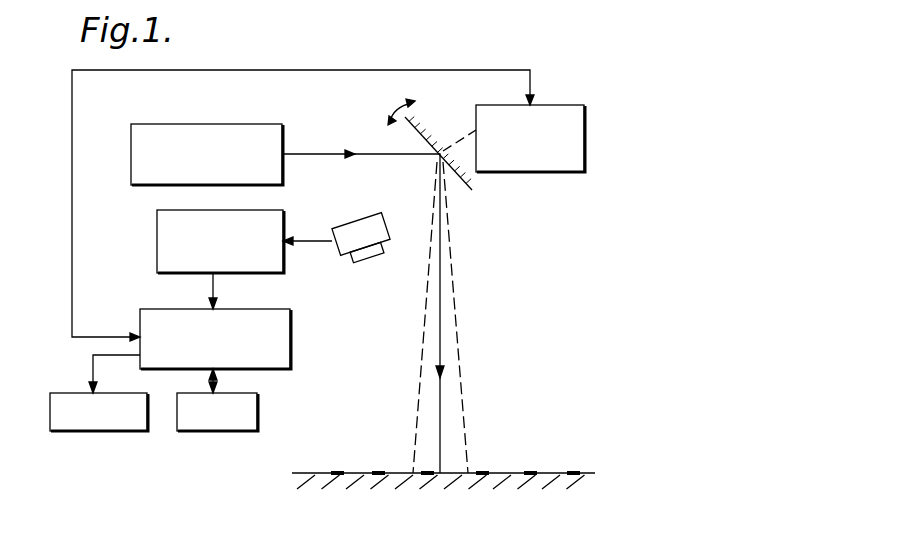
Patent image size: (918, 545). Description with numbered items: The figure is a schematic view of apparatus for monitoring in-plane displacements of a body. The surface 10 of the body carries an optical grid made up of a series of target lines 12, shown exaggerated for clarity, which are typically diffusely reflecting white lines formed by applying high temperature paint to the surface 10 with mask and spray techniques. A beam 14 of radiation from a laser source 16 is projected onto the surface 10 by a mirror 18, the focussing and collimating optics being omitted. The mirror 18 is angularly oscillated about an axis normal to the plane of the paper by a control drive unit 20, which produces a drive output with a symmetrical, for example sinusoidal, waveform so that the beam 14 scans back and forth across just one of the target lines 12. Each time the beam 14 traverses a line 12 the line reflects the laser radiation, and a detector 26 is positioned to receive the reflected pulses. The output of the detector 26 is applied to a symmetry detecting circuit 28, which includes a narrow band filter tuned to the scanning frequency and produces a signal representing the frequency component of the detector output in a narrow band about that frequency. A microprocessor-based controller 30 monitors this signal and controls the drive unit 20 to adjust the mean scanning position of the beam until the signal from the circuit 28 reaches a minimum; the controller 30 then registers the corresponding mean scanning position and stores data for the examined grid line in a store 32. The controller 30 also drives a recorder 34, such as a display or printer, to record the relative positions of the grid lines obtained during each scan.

The surface 10 is at (305, 472).
The target lines 12 is at (426, 471).
The beam 14 is at (323, 157).
The laser source 16 is at (280, 124).
The mirror 18 is at (470, 190).
The control drive unit 20 is at (585, 138).
The detector 26 is at (360, 222).
The symmetry detecting circuit 28 is at (157, 232).
The microprocessor-based controller 30 is at (291, 336).
The store 32 is at (207, 431).
The recorder 34 is at (97, 431).